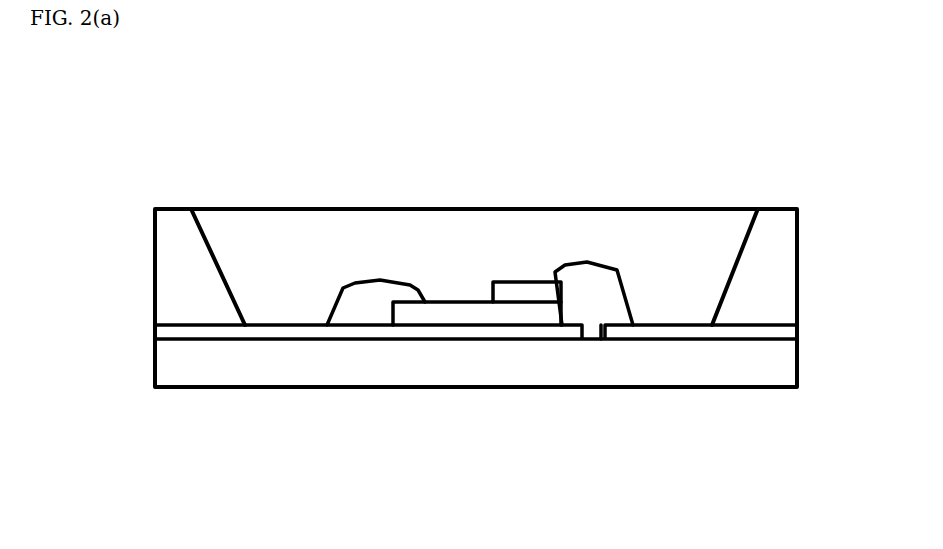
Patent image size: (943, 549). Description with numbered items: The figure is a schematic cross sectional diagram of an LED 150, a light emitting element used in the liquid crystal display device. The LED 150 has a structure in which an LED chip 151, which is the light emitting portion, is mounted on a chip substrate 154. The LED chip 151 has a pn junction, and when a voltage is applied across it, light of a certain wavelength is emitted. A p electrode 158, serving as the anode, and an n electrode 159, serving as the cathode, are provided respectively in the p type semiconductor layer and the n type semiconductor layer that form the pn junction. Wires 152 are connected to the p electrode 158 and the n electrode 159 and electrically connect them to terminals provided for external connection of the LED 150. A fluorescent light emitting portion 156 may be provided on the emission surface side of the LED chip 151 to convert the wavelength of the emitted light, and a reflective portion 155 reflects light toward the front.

The LED 150 is at (442, 402).
The LED chip 151 is at (468, 315).
The wires 152 is at (342, 287).
The chip substrate 154 is at (348, 365).
The reflective portion 155 is at (208, 230).
The fluorescent light emitting portion 156 is at (268, 257).
The p electrode 158 is at (510, 290).
The n electrode 159 is at (430, 313).